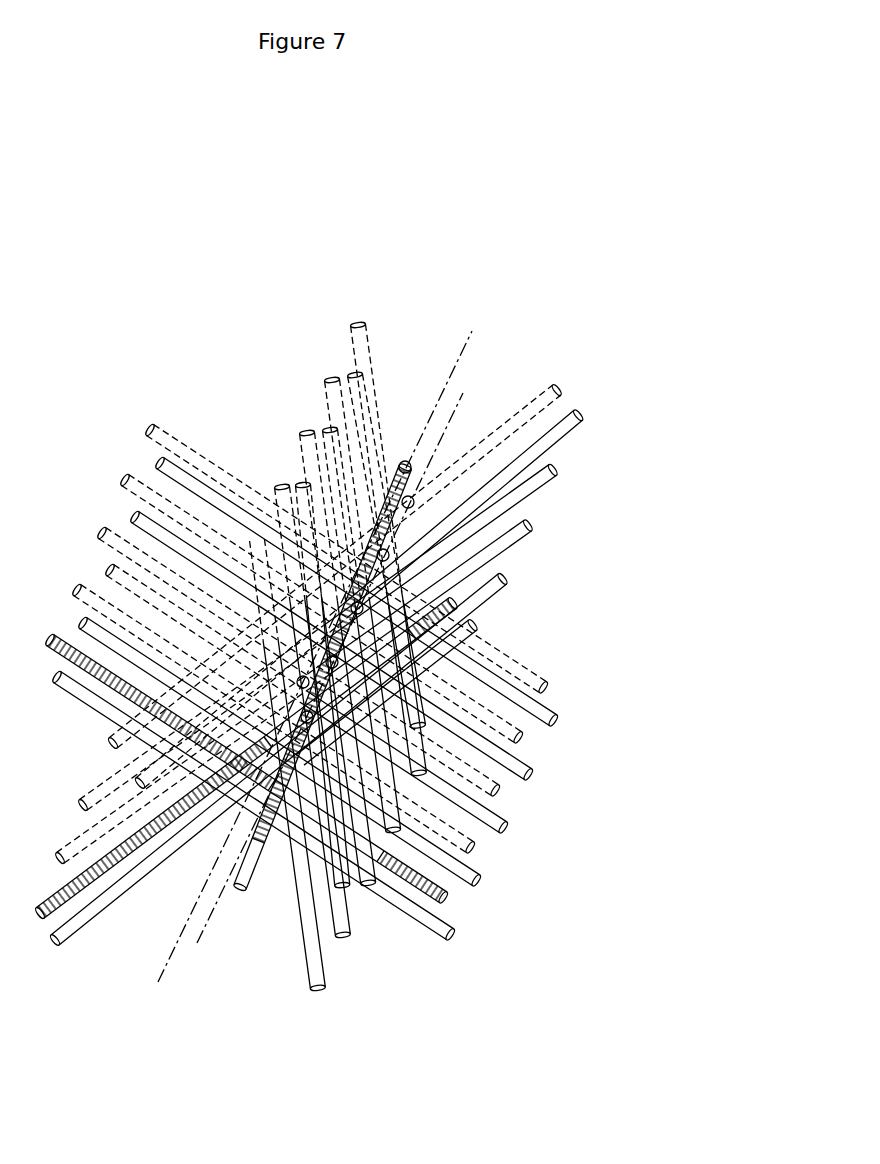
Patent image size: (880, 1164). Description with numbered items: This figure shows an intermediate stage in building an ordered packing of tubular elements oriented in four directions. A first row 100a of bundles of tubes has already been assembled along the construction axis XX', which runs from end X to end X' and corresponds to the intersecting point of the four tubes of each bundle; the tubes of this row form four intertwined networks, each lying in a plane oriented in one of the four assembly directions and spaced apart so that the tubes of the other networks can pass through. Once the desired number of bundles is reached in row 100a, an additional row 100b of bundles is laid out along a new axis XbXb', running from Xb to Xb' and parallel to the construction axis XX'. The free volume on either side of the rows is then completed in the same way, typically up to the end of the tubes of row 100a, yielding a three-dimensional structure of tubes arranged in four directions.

The first row of bundles of tubes 100a is at (269, 834).
The additional row of bundles 100b is at (224, 779).
The construction axis end point X is at (265, 817).
The construction axis end point X' is at (414, 508).
The new axis end point Xb is at (224, 826).
The new axis end point Xb' is at (416, 460).